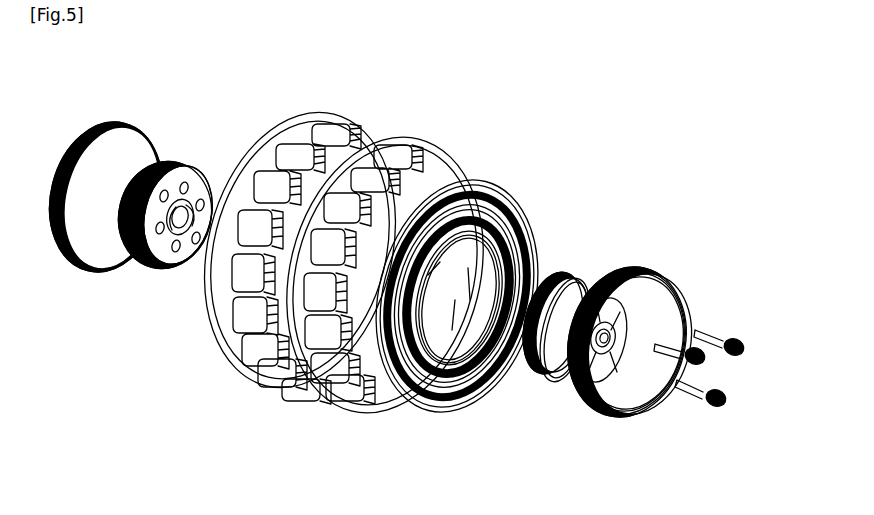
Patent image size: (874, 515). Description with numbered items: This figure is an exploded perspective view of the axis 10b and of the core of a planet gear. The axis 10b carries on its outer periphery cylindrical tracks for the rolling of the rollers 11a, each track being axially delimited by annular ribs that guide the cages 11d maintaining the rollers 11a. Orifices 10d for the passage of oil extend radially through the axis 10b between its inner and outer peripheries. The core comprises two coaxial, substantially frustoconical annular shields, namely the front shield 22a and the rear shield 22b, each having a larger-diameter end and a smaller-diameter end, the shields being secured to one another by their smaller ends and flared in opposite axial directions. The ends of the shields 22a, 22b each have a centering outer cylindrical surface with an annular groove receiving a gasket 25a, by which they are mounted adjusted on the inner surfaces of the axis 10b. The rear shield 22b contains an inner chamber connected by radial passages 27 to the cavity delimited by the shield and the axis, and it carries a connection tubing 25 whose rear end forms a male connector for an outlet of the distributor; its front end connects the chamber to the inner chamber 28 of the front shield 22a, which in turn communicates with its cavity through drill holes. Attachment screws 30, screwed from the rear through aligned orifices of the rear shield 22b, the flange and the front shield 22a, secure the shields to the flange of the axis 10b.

The front shield 22a is at (150, 121).
The gasket 25a is at (140, 262).
The inner chamber 28 is at (220, 210).
The rollers 11a is at (353, 345).
The cages 11d is at (311, 397).
The orifices 10d is at (497, 380).
The axis 10b is at (534, 236).
The radial passages 27 is at (575, 270).
The rear shield 22b is at (611, 246).
The connection tubing 25 is at (608, 352).
The attachment screws 30 is at (697, 348).